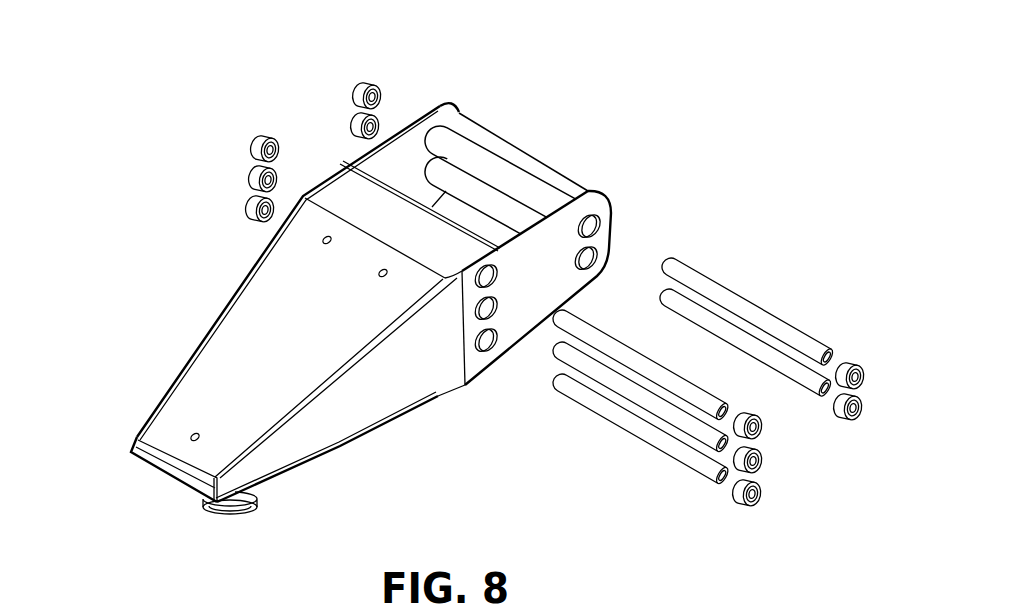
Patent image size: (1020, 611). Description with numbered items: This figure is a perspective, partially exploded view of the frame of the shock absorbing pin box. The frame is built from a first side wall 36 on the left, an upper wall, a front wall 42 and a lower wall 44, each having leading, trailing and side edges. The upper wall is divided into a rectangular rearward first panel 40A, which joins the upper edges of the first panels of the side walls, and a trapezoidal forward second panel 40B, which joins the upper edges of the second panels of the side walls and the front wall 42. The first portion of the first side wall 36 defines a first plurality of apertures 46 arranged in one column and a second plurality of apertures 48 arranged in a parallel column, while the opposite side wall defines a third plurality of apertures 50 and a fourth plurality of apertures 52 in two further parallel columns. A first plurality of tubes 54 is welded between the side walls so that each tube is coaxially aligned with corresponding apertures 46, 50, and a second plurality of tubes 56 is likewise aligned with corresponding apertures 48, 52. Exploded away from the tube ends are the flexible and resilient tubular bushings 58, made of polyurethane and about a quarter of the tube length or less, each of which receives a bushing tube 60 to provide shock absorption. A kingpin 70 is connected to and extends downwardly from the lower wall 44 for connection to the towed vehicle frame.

The first side wall 36 is at (356, 266).
The first panel 40A is at (423, 236).
The second panel 40B is at (334, 313).
The front wall 42 is at (180, 480).
The lower wall 44 is at (301, 468).
The first plurality of apertures 46 is at (301, 197).
The second plurality of apertures 48 is at (420, 112).
The third plurality of apertures 50 is at (499, 305).
The fourth plurality of apertures 52 is at (598, 262).
The first plurality of tubes 54 is at (813, 447).
The second plurality of tubes 56 is at (857, 428).
The flexible and resilient tubular bushing 58 is at (546, 300).
The bushing tube 60 is at (723, 337).
The kingpin 70 is at (237, 513).